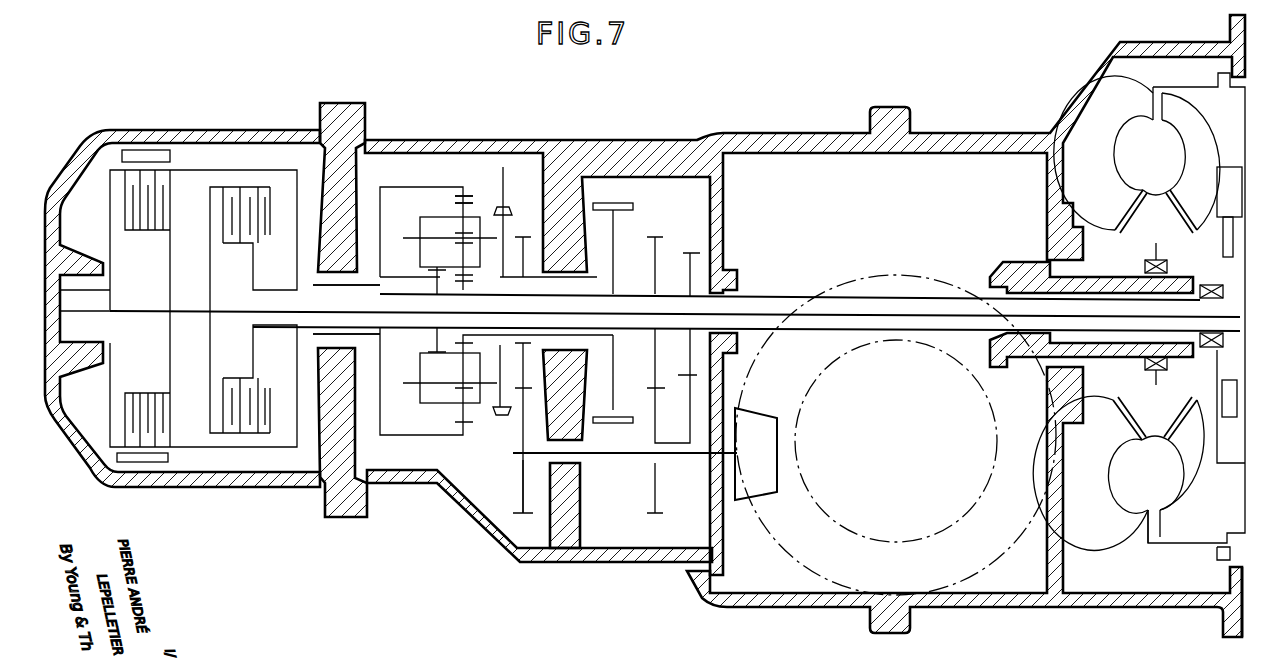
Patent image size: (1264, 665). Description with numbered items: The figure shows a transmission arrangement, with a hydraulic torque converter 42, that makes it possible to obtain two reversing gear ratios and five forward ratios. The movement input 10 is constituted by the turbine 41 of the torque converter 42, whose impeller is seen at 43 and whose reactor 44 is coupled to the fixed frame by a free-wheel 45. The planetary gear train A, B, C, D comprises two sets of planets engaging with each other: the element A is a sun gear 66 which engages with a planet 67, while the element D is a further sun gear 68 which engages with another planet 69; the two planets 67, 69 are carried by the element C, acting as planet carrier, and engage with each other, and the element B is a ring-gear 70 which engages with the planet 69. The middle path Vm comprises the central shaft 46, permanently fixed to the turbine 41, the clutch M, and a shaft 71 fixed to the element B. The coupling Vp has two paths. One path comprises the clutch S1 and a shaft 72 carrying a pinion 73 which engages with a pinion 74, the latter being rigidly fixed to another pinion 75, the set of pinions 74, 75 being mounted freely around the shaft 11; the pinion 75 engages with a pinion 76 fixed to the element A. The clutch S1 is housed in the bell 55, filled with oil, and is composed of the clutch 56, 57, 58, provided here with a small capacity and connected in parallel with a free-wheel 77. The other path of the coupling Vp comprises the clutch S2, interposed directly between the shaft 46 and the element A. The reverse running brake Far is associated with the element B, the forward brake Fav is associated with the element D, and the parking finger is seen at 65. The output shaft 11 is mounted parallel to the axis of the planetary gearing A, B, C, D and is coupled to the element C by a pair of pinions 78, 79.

The movement input 10 is at (1180, 104).
The output shaft 11 is at (615, 456).
The turbine 41 is at (1178, 170).
The hydraulic torque converter 42 is at (1108, 102).
The impeller 43 is at (1141, 153).
The reactor 44 is at (1156, 212).
The free-wheel 45 is at (1143, 265).
The central shaft 46 is at (771, 296).
The bell 55 is at (1182, 541).
The clutch 56 is at (1213, 436).
The clutch 57 is at (1243, 465).
The clutch 58 is at (1222, 405).
The parking finger 65 is at (505, 168).
The sun gear 66 is at (432, 281).
The planet 67 is at (430, 233).
The sun gear 68 is at (478, 266).
The planet 69 is at (455, 200).
The ring-gear 70 is at (408, 187).
The shaft 71 is at (306, 270).
The shaft 72 is at (906, 283).
The pinion 73 is at (689, 253).
The pinion 74 is at (668, 420).
The pinion 75 is at (648, 388).
The pinion 76 is at (653, 280).
The free-wheel 77 is at (1197, 300).
The pinion 78 is at (533, 367).
The pinion 79 is at (537, 420).
The reverse running brake Far is at (144, 150).
The forward brake Fav is at (630, 203).
The middle path Vm is at (226, 167).
The coupling Vp is at (804, 295).
The clutch M is at (143, 232).
The clutch S1 is at (1240, 167).
The clutch S2 is at (236, 244).
The element A is at (430, 345).
The element B is at (385, 187).
The element C is at (403, 383).
The element D is at (500, 350).